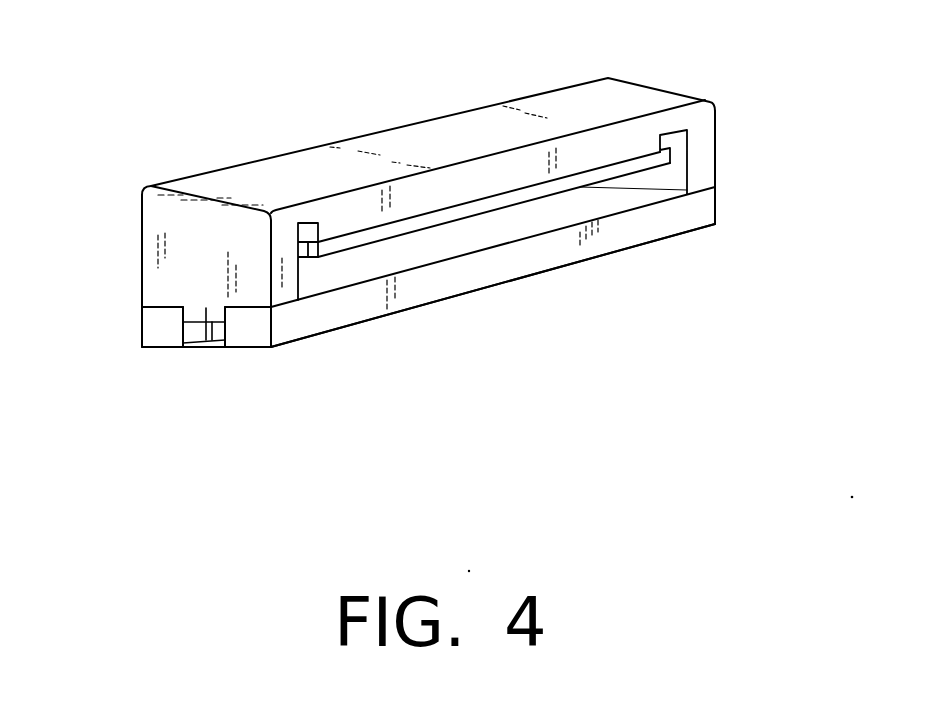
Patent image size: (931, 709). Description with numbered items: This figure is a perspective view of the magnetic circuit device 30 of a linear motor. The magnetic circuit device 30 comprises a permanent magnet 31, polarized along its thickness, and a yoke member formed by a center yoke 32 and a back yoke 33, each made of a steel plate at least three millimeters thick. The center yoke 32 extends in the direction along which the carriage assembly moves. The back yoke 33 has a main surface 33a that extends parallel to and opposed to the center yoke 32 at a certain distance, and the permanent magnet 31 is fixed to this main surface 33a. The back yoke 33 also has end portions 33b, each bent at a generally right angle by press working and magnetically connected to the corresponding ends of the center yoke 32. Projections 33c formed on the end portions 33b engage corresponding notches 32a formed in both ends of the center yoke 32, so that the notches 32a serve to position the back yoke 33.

The magnetic circuit device 30 is at (683, 252).
The permanent magnet 31 is at (540, 193).
The center yoke 32 is at (433, 305).
The notches 32a is at (194, 336).
The back yoke 33 is at (413, 148).
The main surface 33a is at (520, 190).
The end portions 33b is at (142, 260).
The projections 33c is at (207, 340).